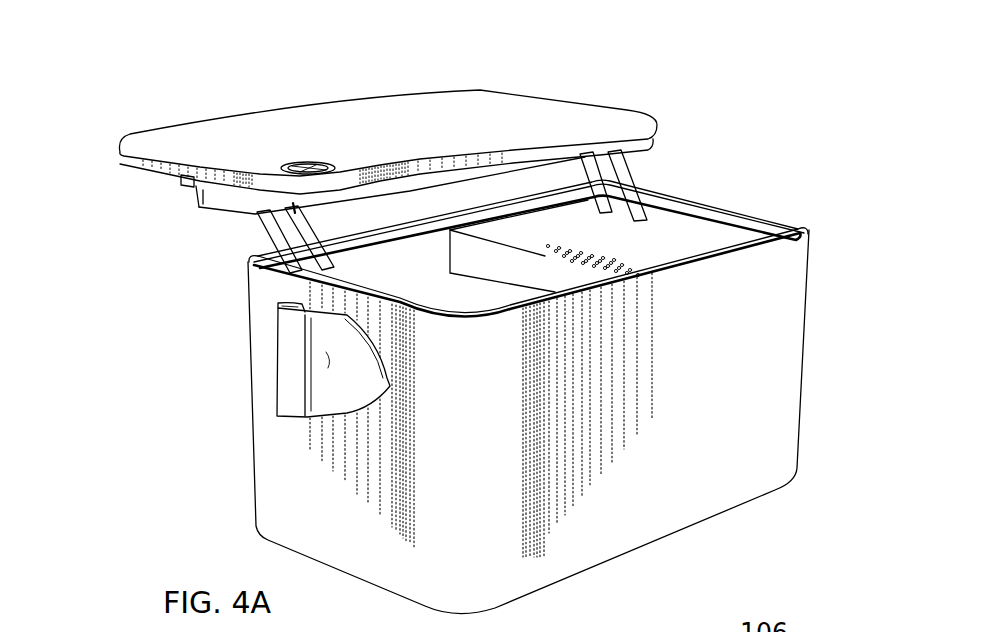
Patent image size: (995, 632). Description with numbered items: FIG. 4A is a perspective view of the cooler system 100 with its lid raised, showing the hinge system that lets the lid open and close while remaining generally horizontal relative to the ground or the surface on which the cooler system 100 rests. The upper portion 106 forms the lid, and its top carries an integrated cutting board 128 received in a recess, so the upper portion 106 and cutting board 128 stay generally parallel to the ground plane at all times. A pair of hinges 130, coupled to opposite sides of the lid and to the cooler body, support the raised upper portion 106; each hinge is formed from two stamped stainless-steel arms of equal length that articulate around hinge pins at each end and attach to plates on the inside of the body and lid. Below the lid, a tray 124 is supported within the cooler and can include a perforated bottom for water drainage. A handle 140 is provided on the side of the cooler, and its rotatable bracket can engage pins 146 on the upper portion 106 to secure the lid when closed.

The cooler system 100 is at (756, 110).
The upper portion 106 is at (388, 111).
The tray 124 is at (667, 237).
The cutting board 128 is at (423, 128).
The hinges 130 is at (270, 235).
The handles 140 is at (271, 370).
The pins 146 is at (185, 176).